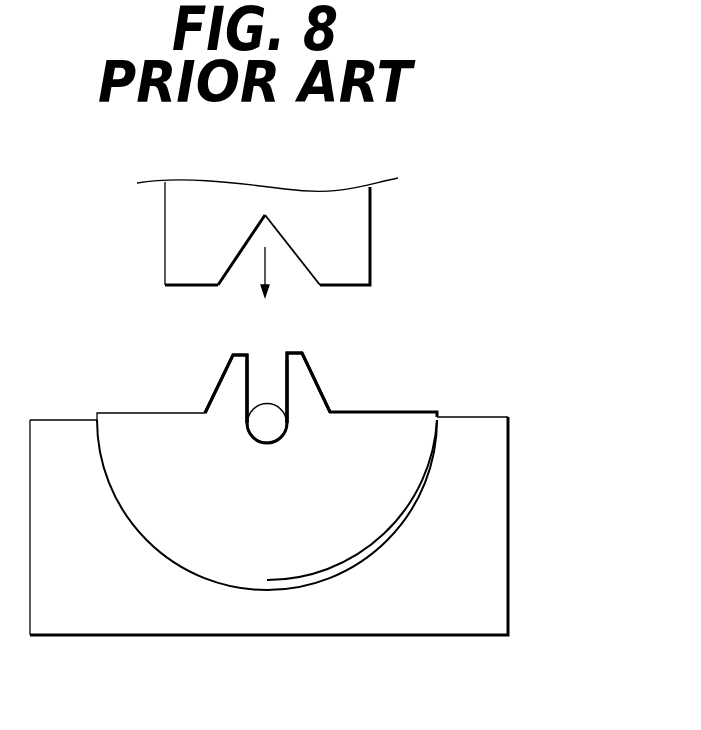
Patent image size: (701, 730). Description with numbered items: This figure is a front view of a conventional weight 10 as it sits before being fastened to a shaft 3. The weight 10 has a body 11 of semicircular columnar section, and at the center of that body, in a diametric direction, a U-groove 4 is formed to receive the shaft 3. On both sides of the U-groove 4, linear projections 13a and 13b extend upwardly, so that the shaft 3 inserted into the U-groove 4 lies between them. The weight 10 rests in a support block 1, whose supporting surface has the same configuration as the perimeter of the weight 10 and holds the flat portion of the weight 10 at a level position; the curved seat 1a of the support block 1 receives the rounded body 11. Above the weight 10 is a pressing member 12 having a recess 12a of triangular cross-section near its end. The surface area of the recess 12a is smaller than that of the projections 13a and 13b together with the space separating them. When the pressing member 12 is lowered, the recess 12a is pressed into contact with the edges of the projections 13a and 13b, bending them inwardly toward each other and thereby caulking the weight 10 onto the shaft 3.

The support block 1 is at (303, 556).
The semicircular recess of die 1a is at (157, 543).
The shaft 3 is at (265, 433).
The U-groove 4 is at (263, 371).
The weight 10 is at (296, 500).
The body 11 is at (350, 558).
The pressing member 12 is at (291, 212).
The recess 12a is at (280, 257).
The linear projection 13a is at (305, 383).
The linear projection 13b is at (217, 382).